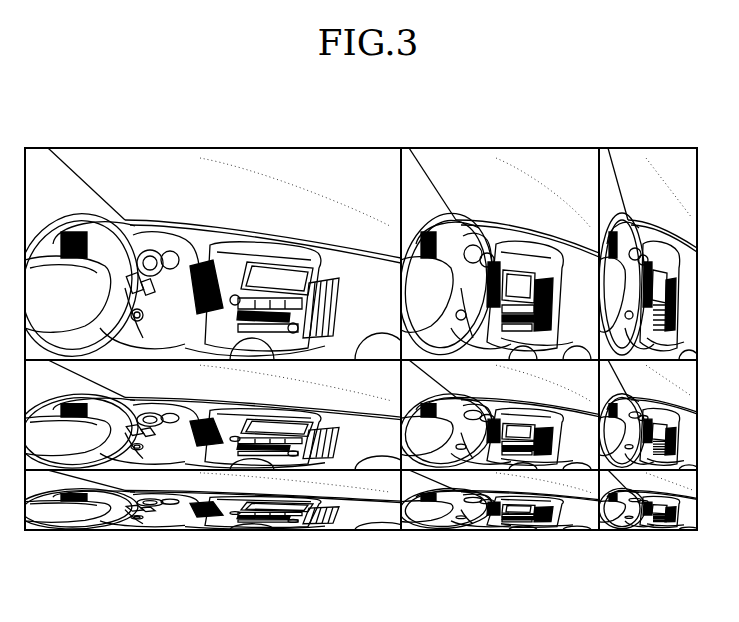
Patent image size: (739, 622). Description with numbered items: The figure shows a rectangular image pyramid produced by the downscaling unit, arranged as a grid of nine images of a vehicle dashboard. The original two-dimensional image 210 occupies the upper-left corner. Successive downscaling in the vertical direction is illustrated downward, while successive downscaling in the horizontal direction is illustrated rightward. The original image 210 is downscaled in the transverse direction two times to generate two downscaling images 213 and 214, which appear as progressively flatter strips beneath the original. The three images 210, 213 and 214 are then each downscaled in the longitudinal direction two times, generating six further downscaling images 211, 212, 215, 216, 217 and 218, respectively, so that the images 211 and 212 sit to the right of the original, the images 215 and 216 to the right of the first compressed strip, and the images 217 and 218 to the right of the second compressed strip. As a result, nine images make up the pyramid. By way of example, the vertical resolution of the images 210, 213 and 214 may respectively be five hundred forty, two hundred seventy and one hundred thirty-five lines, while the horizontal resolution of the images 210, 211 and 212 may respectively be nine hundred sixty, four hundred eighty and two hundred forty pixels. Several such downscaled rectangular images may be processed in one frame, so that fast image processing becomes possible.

The 2D image 210 is at (213, 147).
The downscaling image 211 is at (500, 147).
The downscaling image 212 is at (648, 147).
The downscaling image 213 is at (183, 533).
The downscaling image 214 is at (284, 533).
The downscaling image 215 is at (480, 533).
The downscaling image 216 is at (550, 533).
The downscaling image 217 is at (633, 533).
The downscaling image 218 is at (683, 533).